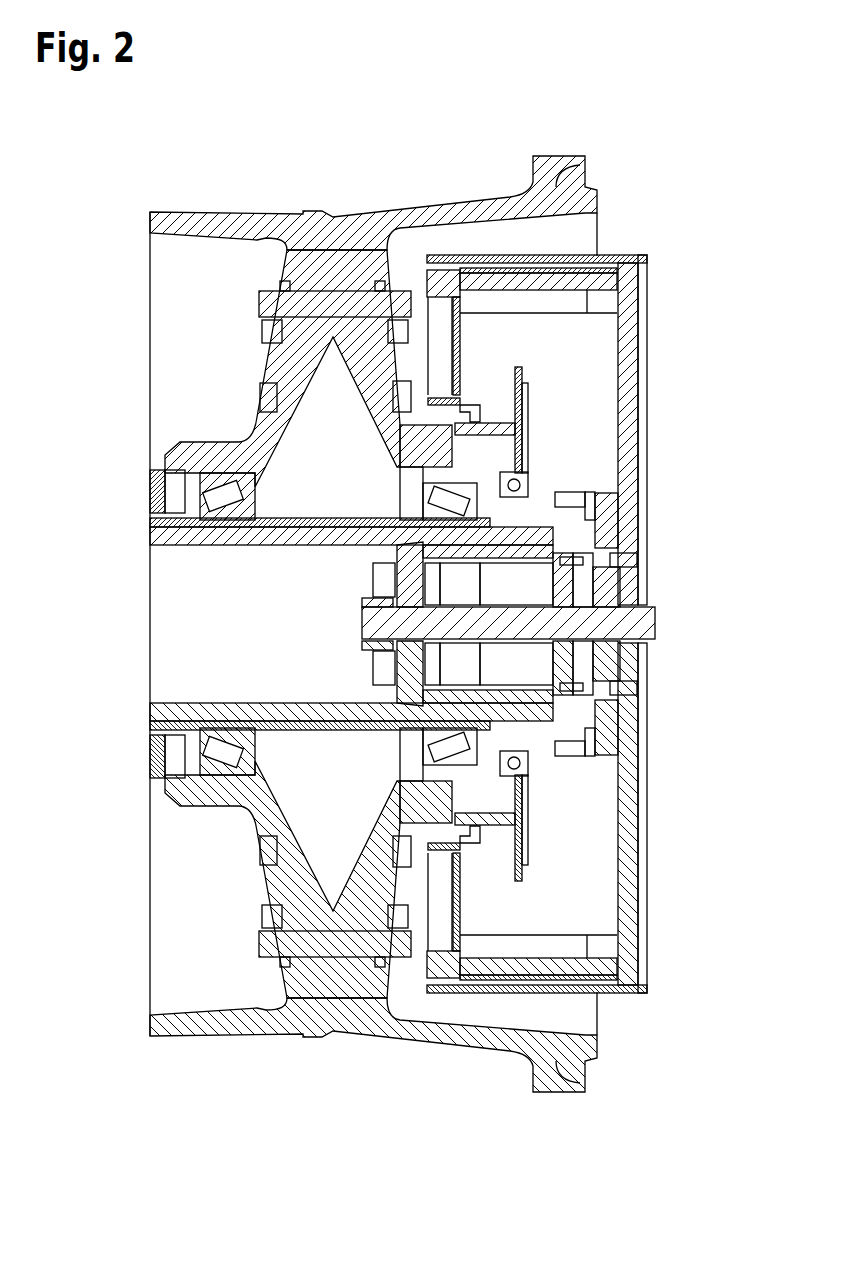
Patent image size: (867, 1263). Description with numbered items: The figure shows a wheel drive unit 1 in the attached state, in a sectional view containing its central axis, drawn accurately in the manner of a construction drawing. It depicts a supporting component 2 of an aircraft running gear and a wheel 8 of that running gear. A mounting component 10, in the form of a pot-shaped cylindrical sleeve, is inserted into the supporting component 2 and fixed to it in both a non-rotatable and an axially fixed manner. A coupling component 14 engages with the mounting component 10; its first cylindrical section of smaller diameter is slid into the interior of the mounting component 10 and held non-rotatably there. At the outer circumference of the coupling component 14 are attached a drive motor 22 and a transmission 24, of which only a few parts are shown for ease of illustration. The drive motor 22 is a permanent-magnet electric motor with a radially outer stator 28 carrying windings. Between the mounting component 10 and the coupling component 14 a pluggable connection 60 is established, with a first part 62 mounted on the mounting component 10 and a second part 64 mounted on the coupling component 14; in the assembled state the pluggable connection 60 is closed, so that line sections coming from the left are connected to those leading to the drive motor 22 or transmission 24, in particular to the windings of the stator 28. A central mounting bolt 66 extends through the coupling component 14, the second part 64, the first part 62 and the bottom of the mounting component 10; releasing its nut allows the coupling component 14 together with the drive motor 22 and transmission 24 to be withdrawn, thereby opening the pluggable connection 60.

The wheel drive unit 1 is at (683, 177).
The supporting component 2 is at (213, 712).
The wheel 8 is at (298, 365).
The mounting component 10 is at (523, 707).
The coupling component 14 is at (610, 548).
The drive motor 22 is at (590, 418).
The transmission 24 is at (537, 392).
The stator 28 is at (600, 283).
The pluggable connection 60 is at (453, 584).
The first part 62 is at (393, 683).
The second part 64 is at (465, 662).
The mounting bolt 66 is at (640, 621).